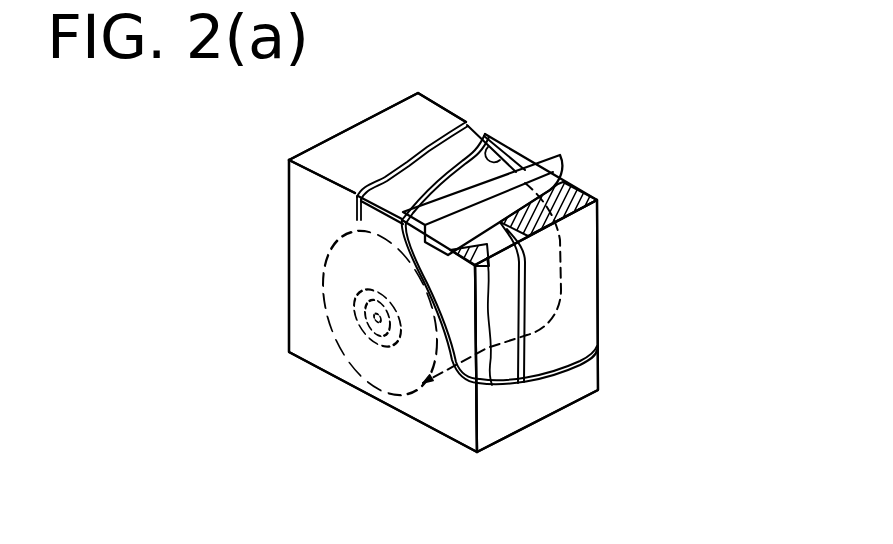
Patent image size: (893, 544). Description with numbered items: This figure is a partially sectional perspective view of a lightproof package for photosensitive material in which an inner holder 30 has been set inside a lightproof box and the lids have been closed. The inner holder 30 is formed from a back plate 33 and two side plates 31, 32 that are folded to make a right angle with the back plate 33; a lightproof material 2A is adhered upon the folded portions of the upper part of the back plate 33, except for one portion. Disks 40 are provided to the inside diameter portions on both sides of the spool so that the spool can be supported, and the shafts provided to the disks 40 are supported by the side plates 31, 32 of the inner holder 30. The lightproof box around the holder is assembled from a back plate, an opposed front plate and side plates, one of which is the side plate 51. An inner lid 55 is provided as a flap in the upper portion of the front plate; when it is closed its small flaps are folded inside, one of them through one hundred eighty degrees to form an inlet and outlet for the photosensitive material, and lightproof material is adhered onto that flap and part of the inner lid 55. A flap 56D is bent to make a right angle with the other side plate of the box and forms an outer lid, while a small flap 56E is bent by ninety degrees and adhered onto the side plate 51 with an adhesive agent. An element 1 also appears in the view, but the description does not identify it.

The sliding member plate 1 is at (560, 162).
The lightproof material 2A is at (585, 193).
The inner holder 30 is at (585, 257).
The side plate 31 is at (518, 145).
The side plate 32 is at (455, 348).
The back plate 33 is at (582, 320).
The disk 40 is at (362, 330).
The side plate 51 is at (306, 290).
The inner lid 55 is at (465, 139).
The flap 56D is at (368, 140).
The small flap 56E is at (312, 188).